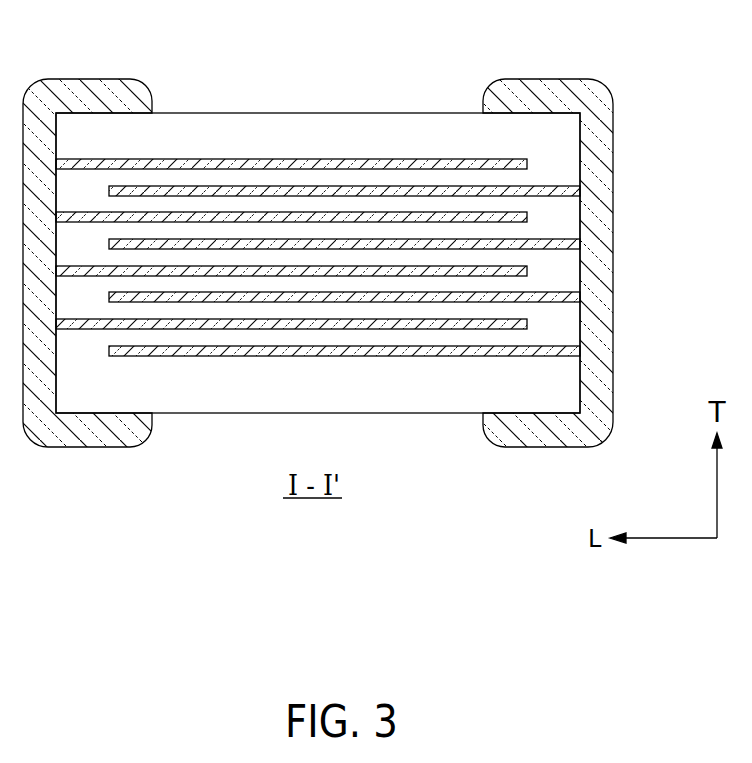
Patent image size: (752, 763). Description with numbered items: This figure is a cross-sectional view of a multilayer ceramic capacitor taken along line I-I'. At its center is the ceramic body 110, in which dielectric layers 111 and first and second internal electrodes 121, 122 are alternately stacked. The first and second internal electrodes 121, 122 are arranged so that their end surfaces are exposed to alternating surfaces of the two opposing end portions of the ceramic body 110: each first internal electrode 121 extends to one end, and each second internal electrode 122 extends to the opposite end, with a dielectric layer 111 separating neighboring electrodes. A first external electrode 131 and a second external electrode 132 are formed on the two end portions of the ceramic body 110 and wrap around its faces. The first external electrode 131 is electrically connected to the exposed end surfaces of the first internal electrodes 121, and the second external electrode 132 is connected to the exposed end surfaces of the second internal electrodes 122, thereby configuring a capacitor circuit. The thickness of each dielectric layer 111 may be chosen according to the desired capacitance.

The ceramic body 110 is at (318, 206).
The dielectric layer 111 is at (213, 232).
The first internal electrode 121 is at (335, 215).
The second internal electrode 122 is at (437, 238).
The first external electrode 131 is at (95, 100).
The second external electrode 132 is at (537, 100).